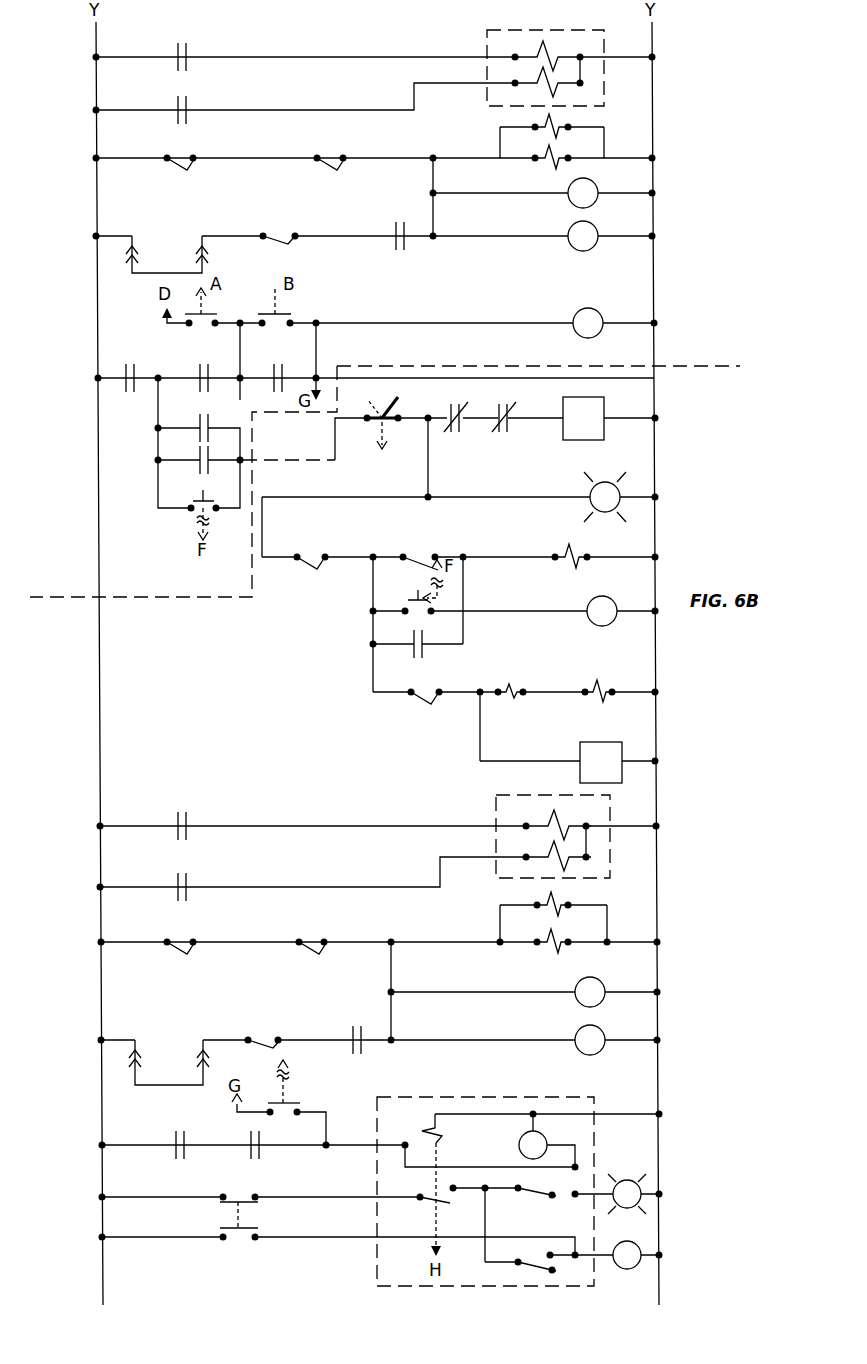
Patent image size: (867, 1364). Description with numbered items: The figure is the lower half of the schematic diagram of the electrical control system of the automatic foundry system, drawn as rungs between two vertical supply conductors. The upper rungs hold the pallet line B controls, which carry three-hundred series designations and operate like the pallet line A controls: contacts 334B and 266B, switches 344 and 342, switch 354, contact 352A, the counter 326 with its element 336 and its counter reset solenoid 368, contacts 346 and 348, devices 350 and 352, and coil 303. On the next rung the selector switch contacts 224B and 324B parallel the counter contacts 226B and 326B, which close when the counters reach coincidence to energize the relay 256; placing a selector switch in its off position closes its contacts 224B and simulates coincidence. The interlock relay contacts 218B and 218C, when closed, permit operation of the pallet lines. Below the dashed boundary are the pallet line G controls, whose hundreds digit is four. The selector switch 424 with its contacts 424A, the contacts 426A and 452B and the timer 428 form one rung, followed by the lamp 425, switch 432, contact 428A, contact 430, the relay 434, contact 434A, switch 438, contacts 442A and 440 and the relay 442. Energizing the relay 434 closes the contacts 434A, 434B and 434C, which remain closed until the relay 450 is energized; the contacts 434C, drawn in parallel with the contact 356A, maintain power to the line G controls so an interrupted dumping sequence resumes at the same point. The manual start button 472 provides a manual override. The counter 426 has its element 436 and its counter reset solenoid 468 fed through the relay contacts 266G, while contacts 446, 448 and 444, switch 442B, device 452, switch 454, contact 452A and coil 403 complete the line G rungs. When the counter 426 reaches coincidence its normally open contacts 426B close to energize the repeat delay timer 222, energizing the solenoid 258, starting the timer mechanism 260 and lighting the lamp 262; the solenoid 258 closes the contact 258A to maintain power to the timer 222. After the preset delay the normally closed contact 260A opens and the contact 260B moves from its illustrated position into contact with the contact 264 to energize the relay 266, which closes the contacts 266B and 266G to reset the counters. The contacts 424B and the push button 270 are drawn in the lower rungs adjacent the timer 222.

The contact 334B is at (192, 36).
The normally open relay contacts 266B is at (192, 89).
The switch 344 is at (179, 140).
The switch 342 is at (328, 140).
The switch 354 is at (280, 233).
The contact 352A is at (399, 232).
The counter 326 is at (487, 32).
The thermal contact 336 is at (543, 44).
The counter reset solenoid 368 is at (555, 76).
The thermal contact 346 is at (571, 121).
The thermal contact 348 is at (571, 149).
The lamp 350 is at (593, 178).
The lamp 352 is at (593, 221).
The relay 256 is at (596, 308).
The coil 303 is at (139, 279).
The switch contacts 224B is at (189, 323).
The push button contact 324B is at (280, 330).
The normally open relay contacts 218B is at (140, 356).
The contacts 226B is at (212, 358).
The contacts 326B is at (297, 360).
The contact 356A is at (224, 426).
The normally open relay contacts 434C is at (196, 460).
The manual start button 472 is at (190, 504).
The selector switch 424 is at (377, 384).
The switch contact 424A is at (398, 416).
The contacts 426A is at (456, 392).
The contact 452B is at (508, 404).
The timer 428 is at (582, 397).
The lamp 425 is at (591, 488).
The switch 432 is at (312, 556).
The switch 428A is at (416, 541).
The thermal contact 430 is at (578, 548).
The relay 434 is at (587, 604).
The relay contacts 434A is at (424, 650).
The switch 438 is at (426, 678).
The thermal contact 442A is at (510, 686).
The thermal contact 440 is at (604, 682).
The relay 442 is at (582, 748).
The relay contacts 434B is at (192, 806).
The normally open relay contacts 266G is at (192, 866).
The counter 426 is at (494, 802).
The thermal contact 436 is at (555, 822).
The counter reset solenoid 468 is at (560, 850).
The thermal contact 446 is at (556, 898).
The thermal contact 448 is at (542, 952).
The switch 444 is at (179, 924).
The switch 442B is at (312, 940).
The relay 450 is at (610, 973).
The lamp 452 is at (610, 1021).
The switch 454 is at (262, 1037).
The contact 452A is at (361, 1028).
The coil 403 is at (170, 1087).
The normally open relay contacts 218C is at (176, 1146).
The push button contact 424B is at (272, 1116).
The normally open relay contacts 426B is at (260, 1150).
The push button contact 270 is at (250, 1204).
The repeat delay timer 222 is at (560, 1097).
The timer mechanism 260 is at (520, 1138).
The solenoid 258 is at (440, 1140).
The normally open contact 258A is at (430, 1190).
The normally closed contact 260A is at (545, 1188).
The lamp 262 is at (640, 1188).
The relay 266 is at (640, 1250).
The contact 260B is at (540, 1272).
The contact 264 is at (553, 1260).